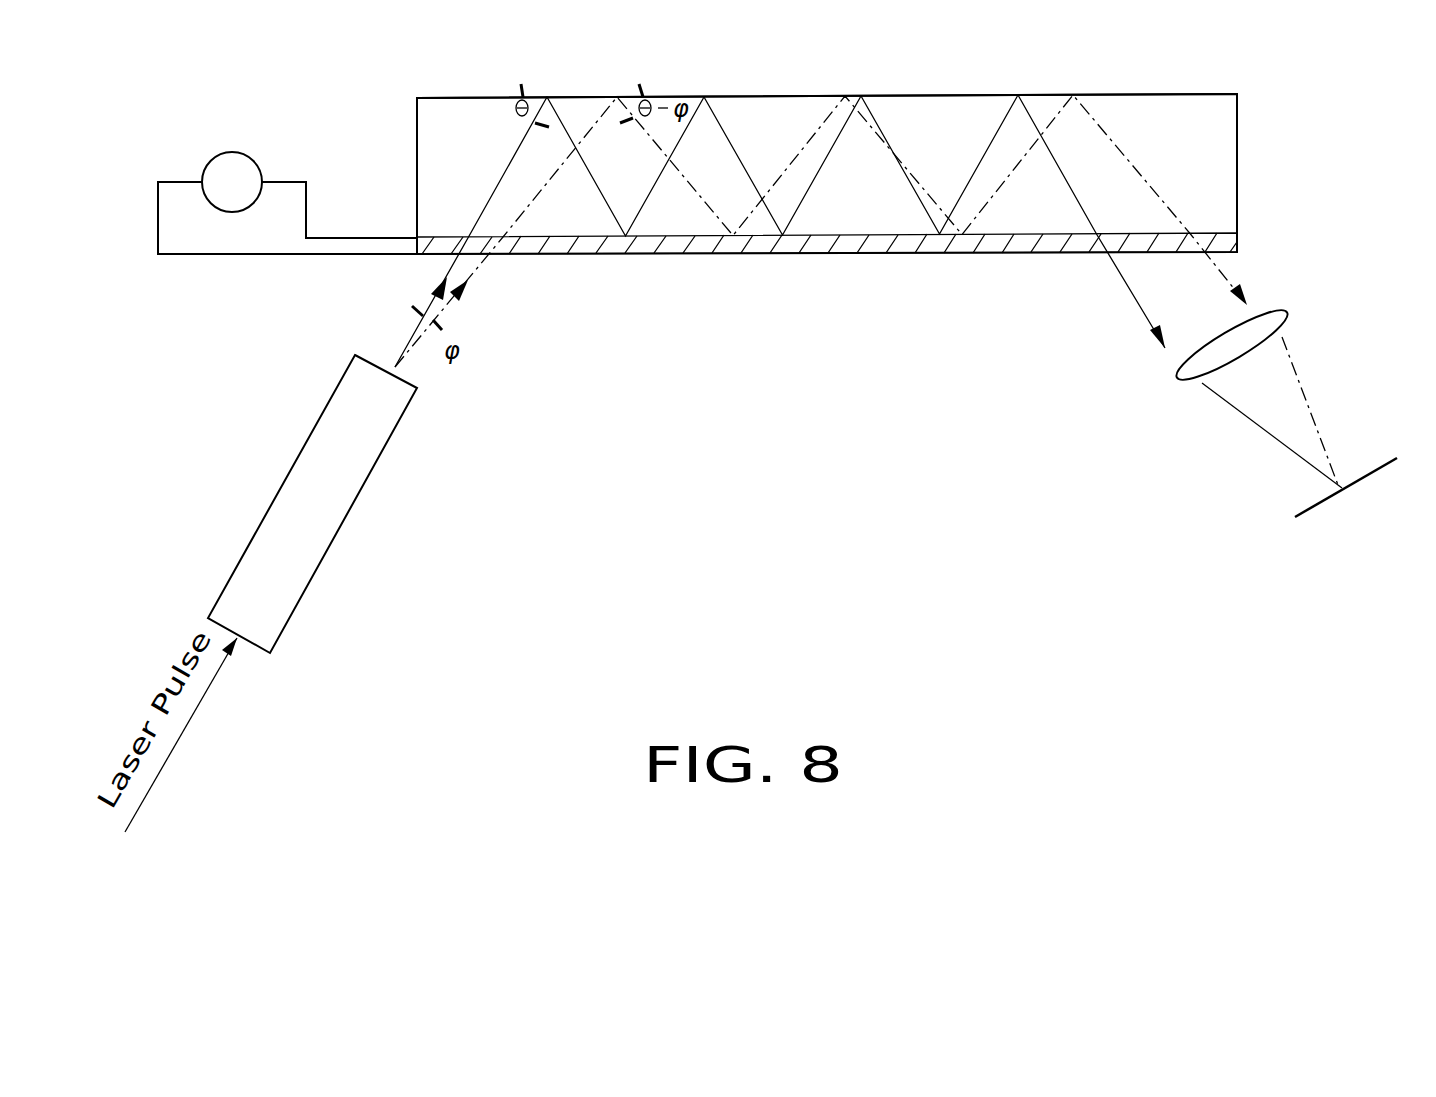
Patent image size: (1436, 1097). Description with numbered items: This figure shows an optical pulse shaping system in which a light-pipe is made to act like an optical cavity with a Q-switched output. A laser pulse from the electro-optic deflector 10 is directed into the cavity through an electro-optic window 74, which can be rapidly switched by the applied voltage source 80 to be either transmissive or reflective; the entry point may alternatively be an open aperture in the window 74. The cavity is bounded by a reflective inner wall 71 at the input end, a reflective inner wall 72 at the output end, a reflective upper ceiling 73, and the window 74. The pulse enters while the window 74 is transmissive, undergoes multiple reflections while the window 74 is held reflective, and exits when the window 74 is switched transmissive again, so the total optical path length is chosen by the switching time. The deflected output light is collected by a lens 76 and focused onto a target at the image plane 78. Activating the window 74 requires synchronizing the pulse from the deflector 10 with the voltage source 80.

The electro-optic deflector 10 is at (348, 515).
The reflective inner wall 71 is at (417, 136).
The reflective inner wall 72 is at (1238, 118).
The reflective upper ceiling 73 is at (470, 97).
The electro-optic window 74 is at (569, 254).
The lens 76 is at (1178, 374).
The image plane 78 is at (1300, 524).
The voltage source 80 is at (240, 153).